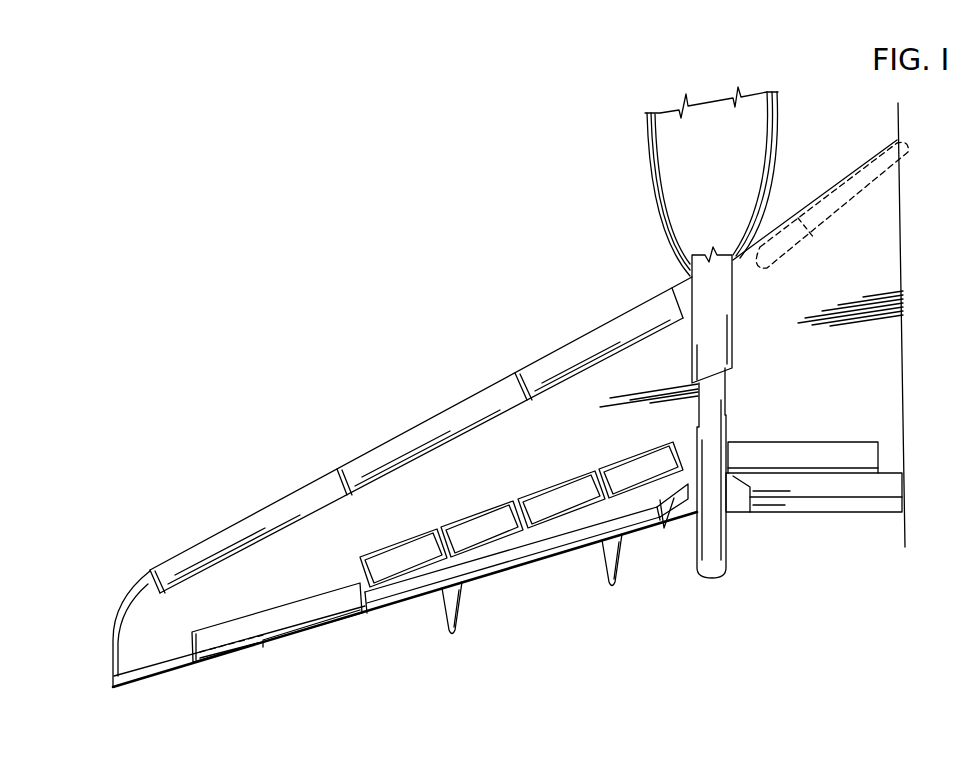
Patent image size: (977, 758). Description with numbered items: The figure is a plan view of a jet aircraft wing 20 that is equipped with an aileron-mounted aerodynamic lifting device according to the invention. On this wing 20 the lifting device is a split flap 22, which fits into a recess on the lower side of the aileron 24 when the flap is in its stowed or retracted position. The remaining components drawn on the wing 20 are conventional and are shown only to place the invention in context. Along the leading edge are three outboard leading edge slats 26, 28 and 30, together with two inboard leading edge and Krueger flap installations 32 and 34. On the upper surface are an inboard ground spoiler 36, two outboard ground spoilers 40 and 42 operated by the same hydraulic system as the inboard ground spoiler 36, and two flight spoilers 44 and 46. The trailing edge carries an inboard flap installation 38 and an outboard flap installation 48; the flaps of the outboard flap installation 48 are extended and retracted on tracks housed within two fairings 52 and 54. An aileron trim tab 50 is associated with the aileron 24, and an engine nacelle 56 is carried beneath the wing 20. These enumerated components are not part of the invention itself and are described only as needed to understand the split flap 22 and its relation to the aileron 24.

The jet aircraft wing 20 is at (310, 411).
The split flap 22 is at (228, 647).
The aileron 24 is at (277, 604).
The outboard leading edge slat 26 is at (235, 521).
The outboard leading edge slat 28 is at (387, 439).
The outboard leading edge slat 30 is at (568, 342).
The inboard leading edge and Krueger flap installation 32 is at (783, 222).
The inboard leading edge and Krueger flap installation 34 is at (842, 178).
The inboard ground spoiler 36 is at (778, 440).
The inboard flap installation 38 is at (797, 516).
The outboard ground spoiler 40 is at (395, 539).
The outboard ground spoiler 42 is at (462, 517).
The flight spoiler 44 is at (540, 489).
The flight spoiler 46 is at (617, 462).
The outboard flap installation 48 is at (514, 580).
The aileron trim tab 50 is at (327, 623).
The fairing 52 is at (462, 612).
The fairing 54 is at (620, 578).
The engine nacelle 56 is at (649, 190).